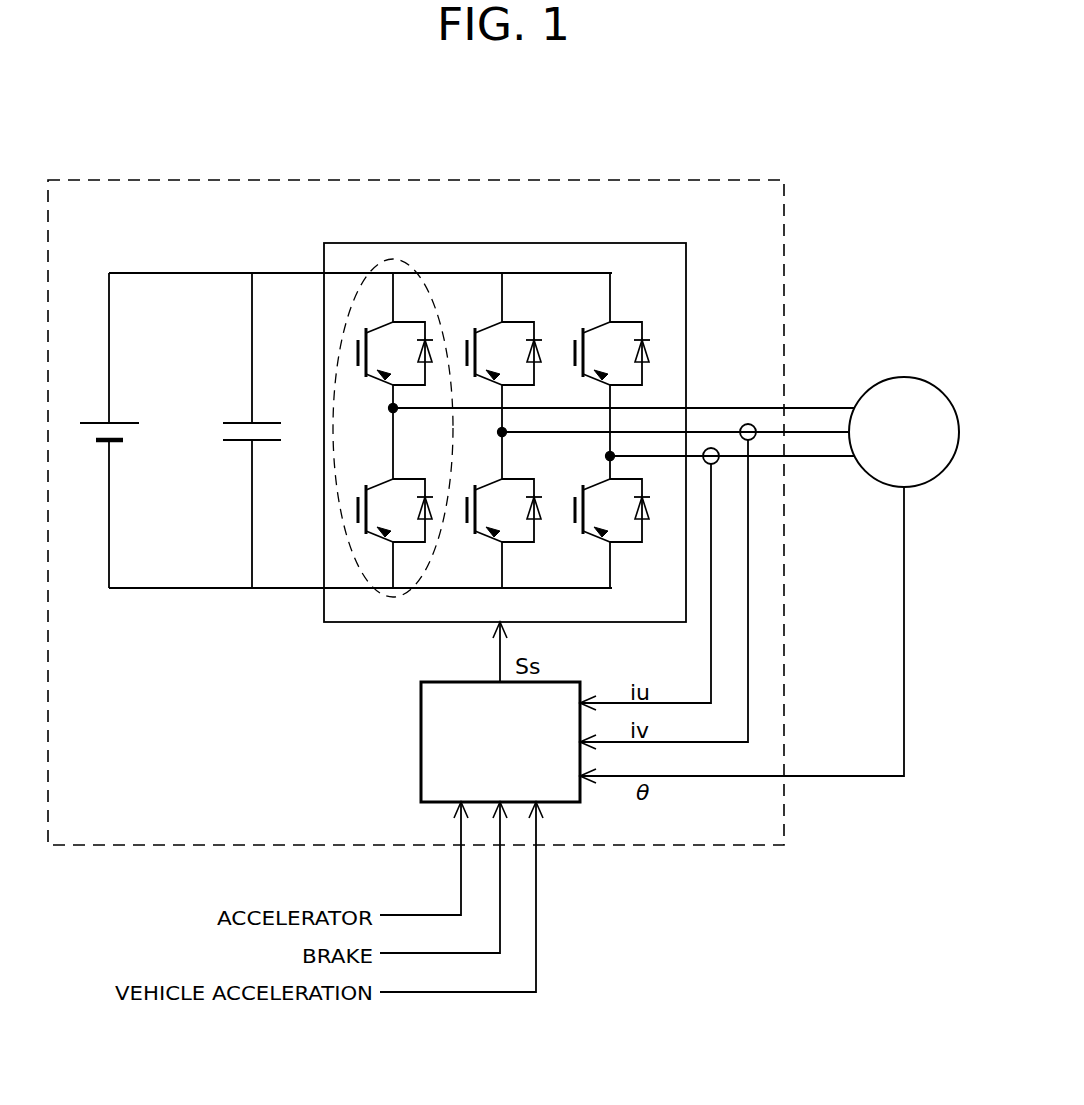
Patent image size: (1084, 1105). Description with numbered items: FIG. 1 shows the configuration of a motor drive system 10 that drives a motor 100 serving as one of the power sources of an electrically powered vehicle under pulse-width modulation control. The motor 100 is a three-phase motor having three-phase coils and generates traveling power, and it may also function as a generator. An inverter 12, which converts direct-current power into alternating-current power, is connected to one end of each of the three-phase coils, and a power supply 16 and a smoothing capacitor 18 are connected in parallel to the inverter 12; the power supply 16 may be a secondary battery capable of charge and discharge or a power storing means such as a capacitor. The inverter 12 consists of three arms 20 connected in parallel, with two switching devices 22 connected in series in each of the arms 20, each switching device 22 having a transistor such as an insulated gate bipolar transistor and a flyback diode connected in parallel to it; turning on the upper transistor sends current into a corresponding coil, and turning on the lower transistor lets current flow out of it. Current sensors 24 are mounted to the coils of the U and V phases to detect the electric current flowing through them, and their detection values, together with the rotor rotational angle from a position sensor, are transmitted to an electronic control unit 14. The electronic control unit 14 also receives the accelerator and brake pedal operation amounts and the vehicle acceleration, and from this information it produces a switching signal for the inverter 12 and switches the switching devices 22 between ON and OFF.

The motor drive system 10 is at (652, 180).
The inverter 12 is at (440, 243).
The electronic control unit 14 is at (420, 742).
The power supply 16 is at (118, 420).
The smoothing capacitor 18 is at (243, 443).
The arm 20 is at (350, 304).
The switching device 22 is at (633, 322).
The current sensor 24 is at (711, 448).
The motor 100 is at (893, 378).